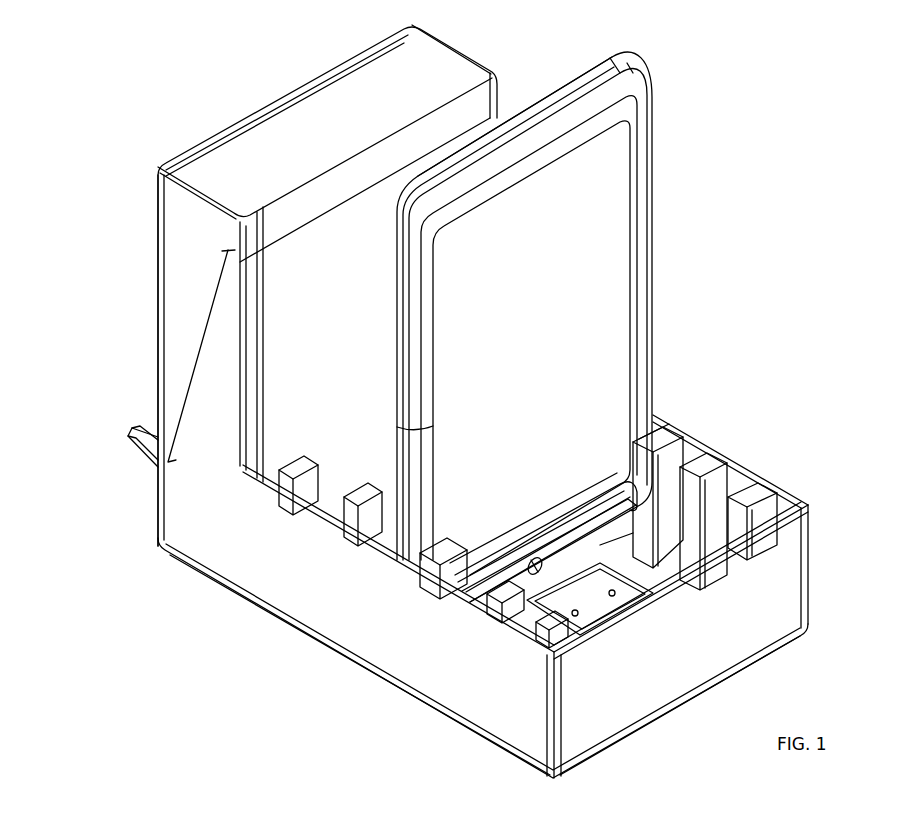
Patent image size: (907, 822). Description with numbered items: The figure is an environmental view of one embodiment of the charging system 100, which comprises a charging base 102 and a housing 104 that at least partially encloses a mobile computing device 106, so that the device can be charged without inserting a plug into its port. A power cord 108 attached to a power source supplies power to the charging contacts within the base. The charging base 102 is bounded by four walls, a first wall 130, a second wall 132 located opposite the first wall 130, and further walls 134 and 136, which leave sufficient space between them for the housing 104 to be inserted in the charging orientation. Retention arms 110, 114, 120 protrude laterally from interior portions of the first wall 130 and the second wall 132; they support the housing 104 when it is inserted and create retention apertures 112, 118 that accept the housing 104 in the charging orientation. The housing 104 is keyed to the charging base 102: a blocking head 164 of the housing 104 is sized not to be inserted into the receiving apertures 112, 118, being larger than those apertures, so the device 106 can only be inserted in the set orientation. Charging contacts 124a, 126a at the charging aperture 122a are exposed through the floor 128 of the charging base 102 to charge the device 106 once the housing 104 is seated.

The charging system 100 is at (200, 578).
The charging base 102 is at (175, 235).
The housing 104 is at (652, 152).
The mobile computing device 106 is at (590, 305).
The power cord 108 is at (140, 452).
The retention arm 110 is at (388, 538).
The retention aperture 112 is at (403, 563).
The retention arm 114 is at (430, 565).
The retention aperture 118 is at (653, 420).
The retention arm 120 is at (672, 433).
The charging aperture 122a is at (603, 607).
The charging contact 124a is at (620, 593).
The charging contact 126a is at (580, 617).
The floor 128 is at (660, 567).
The first wall 130 is at (480, 690).
The second wall 132 is at (745, 465).
The wall 134 is at (773, 592).
The wall 136 is at (176, 335).
The blocking head 164 is at (600, 66).